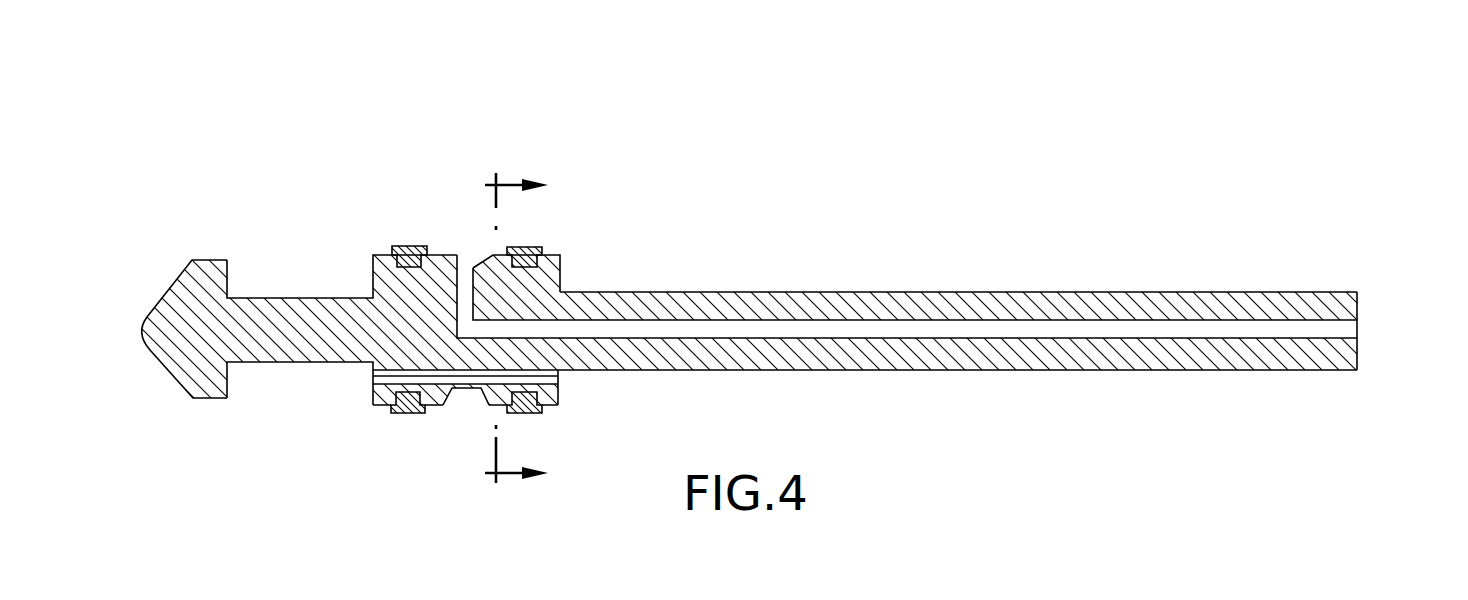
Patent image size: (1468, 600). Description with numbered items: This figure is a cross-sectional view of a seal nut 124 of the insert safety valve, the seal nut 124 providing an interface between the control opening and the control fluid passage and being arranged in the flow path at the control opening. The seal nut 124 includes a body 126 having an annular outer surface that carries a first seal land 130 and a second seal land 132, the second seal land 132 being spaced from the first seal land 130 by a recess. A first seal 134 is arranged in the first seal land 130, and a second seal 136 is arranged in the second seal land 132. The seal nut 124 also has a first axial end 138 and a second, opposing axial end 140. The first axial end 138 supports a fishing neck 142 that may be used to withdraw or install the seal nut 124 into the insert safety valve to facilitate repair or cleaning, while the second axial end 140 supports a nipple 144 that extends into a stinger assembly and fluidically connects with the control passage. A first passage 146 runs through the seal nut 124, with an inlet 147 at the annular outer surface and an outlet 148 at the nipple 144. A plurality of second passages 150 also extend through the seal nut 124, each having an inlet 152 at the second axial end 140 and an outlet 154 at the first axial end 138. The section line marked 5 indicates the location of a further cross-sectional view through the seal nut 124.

The seal nut 124 is at (208, 111).
The body 126 is at (360, 280).
The first seal land 130 is at (385, 393).
The second seal land 132 is at (552, 396).
The first seal 134 is at (409, 413).
The seal 136 is at (526, 413).
The first axial end 138 is at (373, 263).
The second axial end 140 is at (558, 257).
The fishing neck 142 is at (178, 290).
The nipple 144 is at (820, 353).
The first passage 146 is at (465, 292).
The inlet 147 is at (464, 266).
The outlet 148 is at (1358, 340).
The second passages 150 is at (462, 390).
The inlet 152 is at (547, 378).
The gap 154 is at (385, 373).
The section line 5- 5 is at (530, 329).